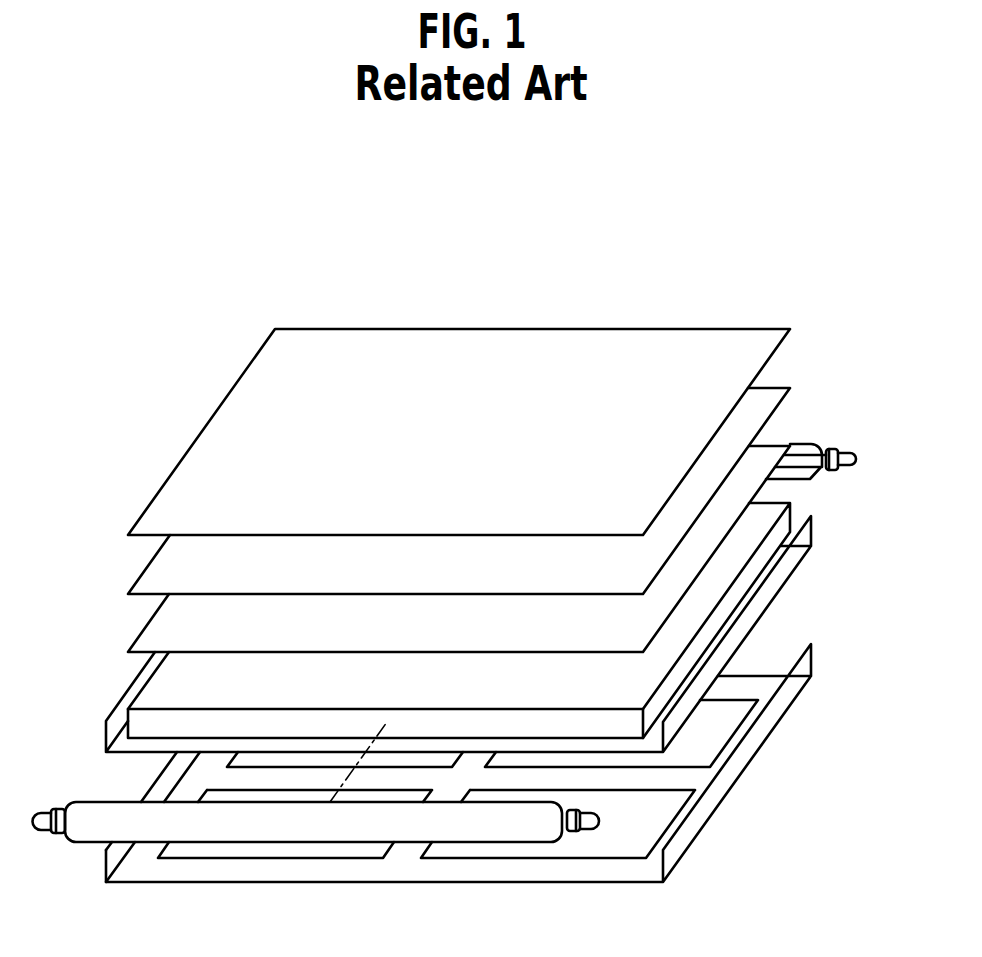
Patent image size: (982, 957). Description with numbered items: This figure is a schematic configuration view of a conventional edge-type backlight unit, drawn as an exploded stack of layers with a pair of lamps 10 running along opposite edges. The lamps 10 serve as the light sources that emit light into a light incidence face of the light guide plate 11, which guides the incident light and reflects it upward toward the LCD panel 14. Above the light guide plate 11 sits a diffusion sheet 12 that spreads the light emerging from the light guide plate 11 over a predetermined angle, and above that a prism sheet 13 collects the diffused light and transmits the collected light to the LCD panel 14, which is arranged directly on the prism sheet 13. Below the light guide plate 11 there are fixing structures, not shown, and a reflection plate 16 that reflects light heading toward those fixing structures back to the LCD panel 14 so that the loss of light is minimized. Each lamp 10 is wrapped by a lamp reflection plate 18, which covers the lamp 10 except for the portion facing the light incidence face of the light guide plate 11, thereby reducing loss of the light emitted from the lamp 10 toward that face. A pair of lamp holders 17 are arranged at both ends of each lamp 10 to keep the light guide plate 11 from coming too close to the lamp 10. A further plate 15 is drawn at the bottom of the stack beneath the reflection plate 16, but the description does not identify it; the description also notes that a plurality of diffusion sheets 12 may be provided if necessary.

The lamp 10 is at (856, 459).
The light guide plate 11 is at (153, 689).
The diffusion sheet 12 is at (153, 631).
The prism sheet 13 is at (153, 572).
The LCD panel 14 is at (153, 514).
The lower frame 15 is at (107, 860).
The reflection plate 16 is at (107, 730).
The lamp holder 17 is at (832, 449).
The lamp reflection plate 18 is at (802, 443).